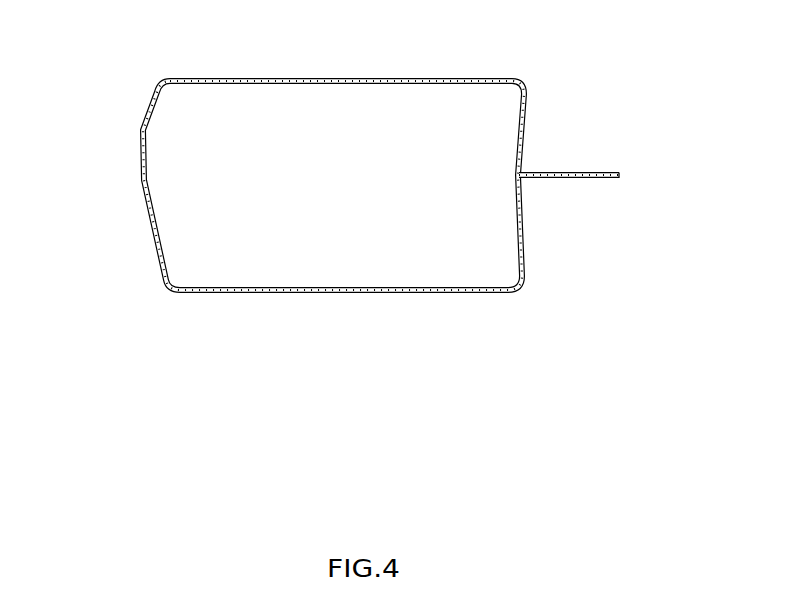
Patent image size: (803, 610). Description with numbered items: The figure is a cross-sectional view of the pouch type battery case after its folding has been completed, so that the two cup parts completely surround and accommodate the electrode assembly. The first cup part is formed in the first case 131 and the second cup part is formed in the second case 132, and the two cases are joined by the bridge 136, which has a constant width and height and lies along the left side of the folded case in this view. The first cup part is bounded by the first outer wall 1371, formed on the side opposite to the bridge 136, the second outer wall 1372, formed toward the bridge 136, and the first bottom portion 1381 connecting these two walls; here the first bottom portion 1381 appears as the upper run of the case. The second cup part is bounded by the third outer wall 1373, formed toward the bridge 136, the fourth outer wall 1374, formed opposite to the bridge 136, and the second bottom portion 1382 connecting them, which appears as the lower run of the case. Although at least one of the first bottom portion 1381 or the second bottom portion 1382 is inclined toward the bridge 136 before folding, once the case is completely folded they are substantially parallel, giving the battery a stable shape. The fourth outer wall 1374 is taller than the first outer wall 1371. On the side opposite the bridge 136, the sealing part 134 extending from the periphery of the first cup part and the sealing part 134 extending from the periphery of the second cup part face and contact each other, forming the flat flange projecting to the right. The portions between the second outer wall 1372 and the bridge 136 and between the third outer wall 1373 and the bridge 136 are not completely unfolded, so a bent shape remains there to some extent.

The first case 131 is at (493, 79).
The second case 132 is at (490, 293).
The sealing part 134 is at (622, 175).
The bridge 136 is at (141, 156).
The first outer wall 1371 is at (527, 137).
The second outer wall 1372 is at (149, 111).
The third outer wall 1373 is at (148, 233).
The fourth outer wall 1374 is at (524, 237).
The first bottom portion 1381 is at (342, 79).
The second bottom portion 1382 is at (335, 293).